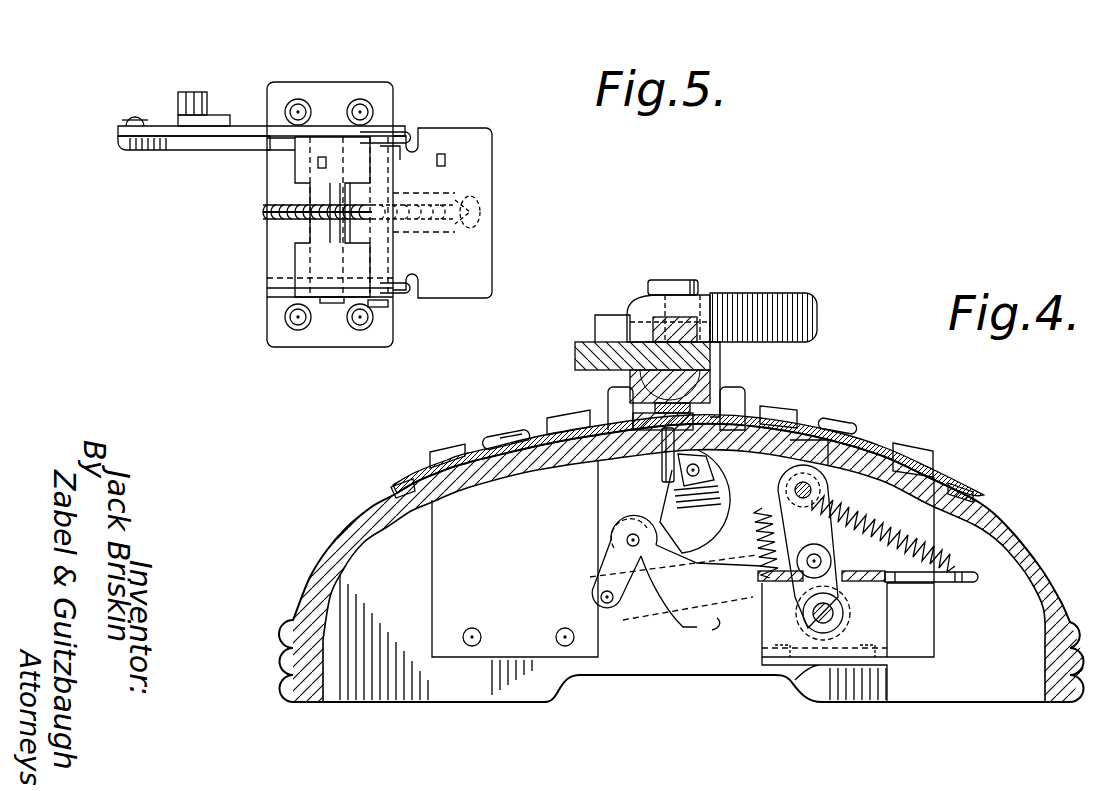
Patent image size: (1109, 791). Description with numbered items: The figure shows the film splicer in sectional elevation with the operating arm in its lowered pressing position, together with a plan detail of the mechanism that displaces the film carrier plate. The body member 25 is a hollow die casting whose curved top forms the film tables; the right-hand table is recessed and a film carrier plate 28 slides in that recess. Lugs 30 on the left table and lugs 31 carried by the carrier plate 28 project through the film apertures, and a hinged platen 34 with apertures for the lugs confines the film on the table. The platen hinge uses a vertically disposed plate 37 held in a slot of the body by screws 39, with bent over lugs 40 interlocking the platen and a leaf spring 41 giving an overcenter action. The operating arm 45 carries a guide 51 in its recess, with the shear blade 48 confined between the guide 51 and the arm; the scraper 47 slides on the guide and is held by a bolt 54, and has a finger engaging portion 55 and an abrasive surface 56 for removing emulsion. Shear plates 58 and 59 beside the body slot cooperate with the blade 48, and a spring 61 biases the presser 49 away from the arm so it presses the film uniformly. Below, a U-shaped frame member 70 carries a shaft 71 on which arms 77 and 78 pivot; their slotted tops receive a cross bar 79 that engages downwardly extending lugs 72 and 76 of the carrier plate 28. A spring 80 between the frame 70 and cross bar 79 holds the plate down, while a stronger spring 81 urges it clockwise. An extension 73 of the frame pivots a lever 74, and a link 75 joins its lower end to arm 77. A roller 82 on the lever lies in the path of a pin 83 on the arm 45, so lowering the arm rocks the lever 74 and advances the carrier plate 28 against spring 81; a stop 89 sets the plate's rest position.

In FIG. 4, the body member 25 is at (322, 548).
In FIG. 5, the film carrier plate 28 is at (487, 250).
In FIG. 4, the lugs 30 is at (497, 436).
In FIG. 5, the lugs 31 is at (443, 154).
In FIG. 4, the lugs 31 is at (872, 444).
In FIG. 4, the platen 34 is at (410, 482).
In FIG. 4, the vertically disposed plate 37 is at (445, 590).
In FIG. 4, the screws 39 is at (558, 630).
In FIG. 4, the bent over lugs 40 is at (432, 450).
In FIG. 4, the leaf spring 41 is at (505, 434).
In FIG. 4, the operating arm 45 is at (700, 370).
In FIG. 4, the scraper 47 is at (700, 308).
In FIG. 4, the shear blade 48 is at (575, 356).
In FIG. 4, the presser 49 is at (633, 420).
In FIG. 4, the guide 51 is at (635, 310).
In FIG. 4, the bolt 54 is at (680, 290).
In FIG. 4, the finger engaging portion 55 is at (810, 296).
In FIG. 4, the roughened or abrasive surface 56 is at (596, 328).
In FIG. 4, the shear plate 58 is at (625, 457).
In FIG. 4, the shear plate 59 is at (725, 425).
In FIG. 4, the spring 61 is at (690, 394).
In FIG. 5, the U-shaped frame member 70 is at (267, 245).
In FIG. 4, the U-shaped frame member 70 is at (890, 628).
In FIG. 5, the shaft 71 is at (335, 303).
In FIG. 4, the shaft 71 is at (845, 614).
In FIG. 5, the downwardly extending lug 72 is at (405, 282).
In FIG. 5, the extension 73 is at (242, 150).
In FIG. 4, the extension 73 is at (718, 618).
In FIG. 5, the lever 74 is at (200, 128).
In FIG. 4, the lever 74 is at (712, 507).
In FIG. 5, the link 75 is at (242, 125).
In FIG. 4, the link 75 is at (655, 606).
In FIG. 5, the downwardly extending lug 76 is at (400, 160).
In FIG. 4, the downwardly extending lug 76 is at (786, 498).
In FIG. 5, the arm 77 is at (408, 292).
In FIG. 5, the arm 78 is at (408, 132).
In FIG. 4, the arm 78 is at (830, 545).
In FIG. 5, the cross bar 79 is at (388, 307).
In FIG. 4, the cross bar 79 is at (815, 498).
In FIG. 5, the spring 80 is at (263, 212).
In FIG. 4, the spring 80 is at (762, 535).
In FIG. 5, the spring 81 is at (478, 200).
In FIG. 4, the spring 81 is at (955, 568).
In FIG. 5, the roller 82 is at (186, 92).
In FIG. 4, the roller 82 is at (684, 482).
In FIG. 4, the pin 83 is at (662, 466).
In FIG. 4, the stop 89 is at (962, 486).